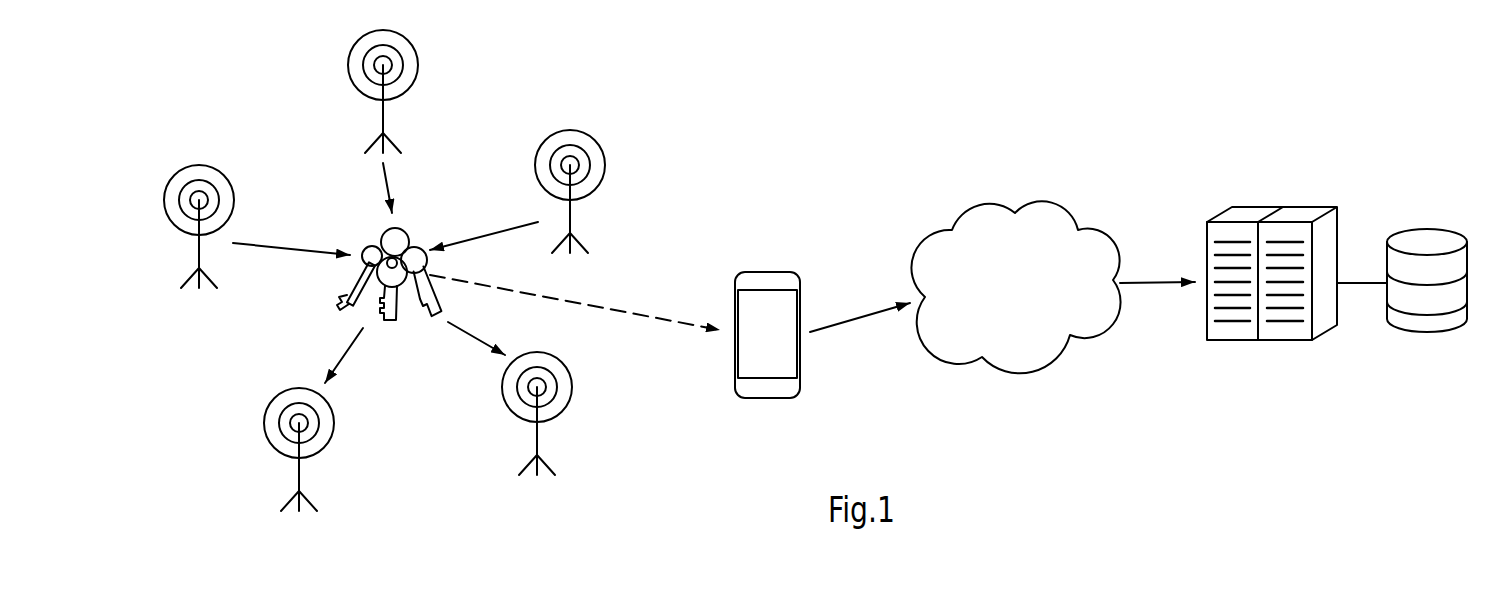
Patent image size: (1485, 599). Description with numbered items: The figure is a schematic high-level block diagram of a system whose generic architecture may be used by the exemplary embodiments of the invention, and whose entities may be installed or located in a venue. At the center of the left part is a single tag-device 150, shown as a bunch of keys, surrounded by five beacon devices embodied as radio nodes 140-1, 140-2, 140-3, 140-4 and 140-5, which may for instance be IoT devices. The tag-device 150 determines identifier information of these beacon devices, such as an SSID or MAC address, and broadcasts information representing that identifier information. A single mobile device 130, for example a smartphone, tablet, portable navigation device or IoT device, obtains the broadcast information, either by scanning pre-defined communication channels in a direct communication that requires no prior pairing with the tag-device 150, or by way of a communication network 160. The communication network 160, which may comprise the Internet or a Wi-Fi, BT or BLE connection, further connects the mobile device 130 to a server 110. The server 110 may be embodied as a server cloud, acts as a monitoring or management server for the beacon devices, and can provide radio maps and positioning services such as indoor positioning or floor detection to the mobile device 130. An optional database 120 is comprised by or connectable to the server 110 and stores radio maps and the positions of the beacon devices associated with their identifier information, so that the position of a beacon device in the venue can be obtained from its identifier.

The server 110 is at (1283, 342).
The database 120 is at (1427, 343).
The mobile device 130 is at (768, 272).
The radio node 140-1 is at (383, 115).
The radio node 140-2 is at (570, 215).
The radio node 140-3 is at (537, 437).
The radio node 140-4 is at (299, 473).
The radio node 140-5 is at (199, 250).
The tag-device 150 is at (392, 323).
The communication network 160 is at (1032, 295).